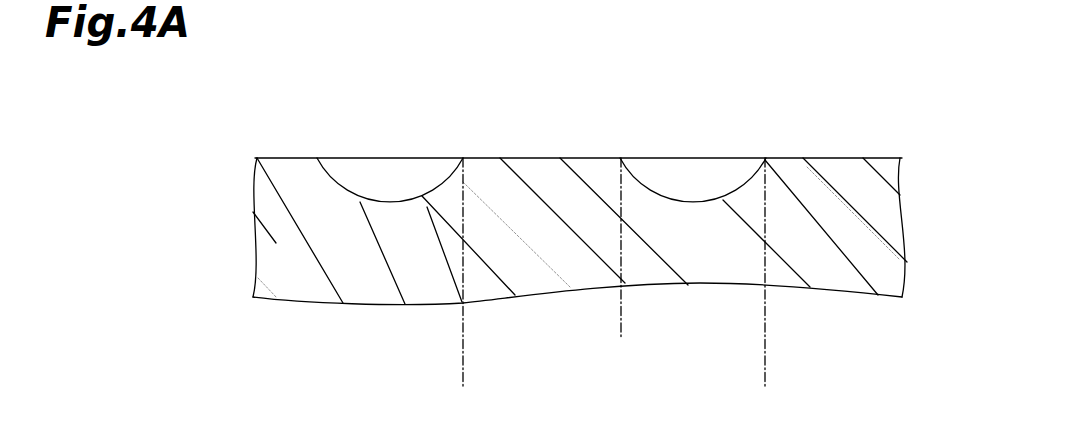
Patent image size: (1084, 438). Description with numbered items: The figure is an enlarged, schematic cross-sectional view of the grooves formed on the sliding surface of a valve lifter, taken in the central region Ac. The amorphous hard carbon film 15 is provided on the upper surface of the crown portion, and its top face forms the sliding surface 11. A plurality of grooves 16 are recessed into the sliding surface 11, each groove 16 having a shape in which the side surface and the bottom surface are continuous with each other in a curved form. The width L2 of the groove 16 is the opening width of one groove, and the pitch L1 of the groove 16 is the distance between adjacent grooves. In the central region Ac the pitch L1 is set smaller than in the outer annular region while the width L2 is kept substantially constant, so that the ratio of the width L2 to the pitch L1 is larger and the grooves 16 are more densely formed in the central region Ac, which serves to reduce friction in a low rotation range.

The sliding surface 11 is at (274, 157).
The amorphous hard carbon film 15 is at (277, 242).
The groove 16 is at (374, 202).
The central region Ac is at (562, 76).
The pitch of the groove L1 is at (765, 379).
The width of the groove L2 is at (765, 328).